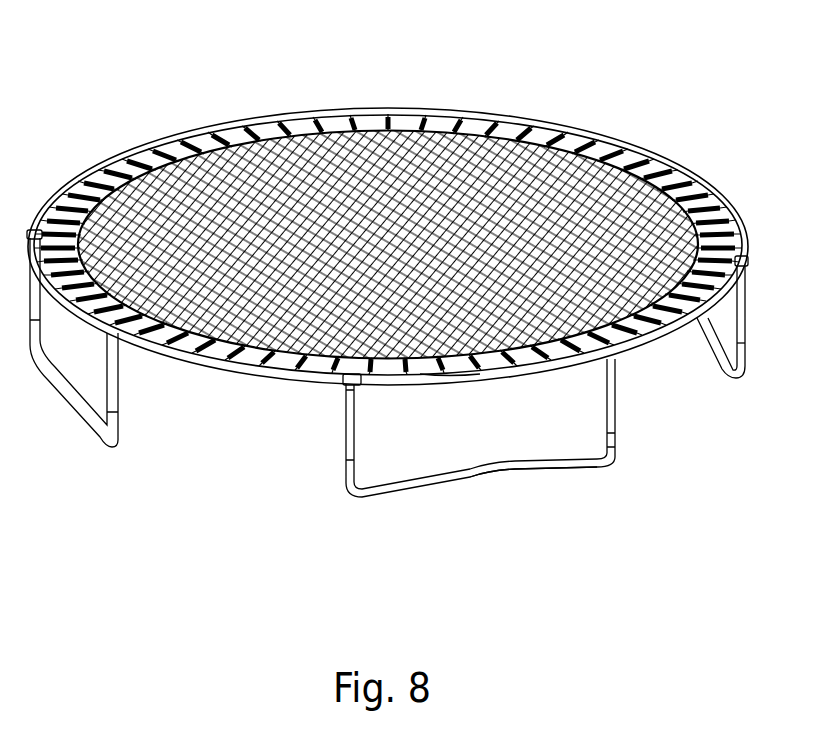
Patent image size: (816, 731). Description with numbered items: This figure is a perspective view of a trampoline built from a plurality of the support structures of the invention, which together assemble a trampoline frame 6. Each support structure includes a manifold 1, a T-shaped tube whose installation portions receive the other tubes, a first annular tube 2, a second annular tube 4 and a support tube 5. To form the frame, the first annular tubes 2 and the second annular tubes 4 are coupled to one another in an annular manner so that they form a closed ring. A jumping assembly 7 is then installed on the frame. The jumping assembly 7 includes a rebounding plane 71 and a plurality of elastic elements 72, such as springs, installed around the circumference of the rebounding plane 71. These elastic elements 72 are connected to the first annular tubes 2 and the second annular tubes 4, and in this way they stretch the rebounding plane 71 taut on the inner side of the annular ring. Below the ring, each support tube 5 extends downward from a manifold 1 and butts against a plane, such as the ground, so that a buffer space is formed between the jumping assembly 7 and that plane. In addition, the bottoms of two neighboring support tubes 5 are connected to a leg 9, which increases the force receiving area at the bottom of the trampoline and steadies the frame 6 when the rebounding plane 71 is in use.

The manifold 1 is at (333, 385).
The first annular tube 2 is at (229, 372).
The second annular tube 4 is at (458, 378).
The support tube 5 is at (352, 441).
The trampoline frame 6 is at (566, 125).
The jumping assembly 7 is at (388, 194).
The rebounding plane 71 is at (347, 130).
The elastic element 72 is at (353, 55).
The leg 9 is at (527, 478).